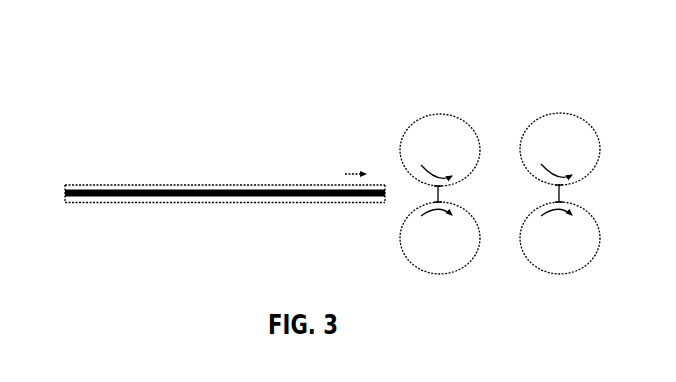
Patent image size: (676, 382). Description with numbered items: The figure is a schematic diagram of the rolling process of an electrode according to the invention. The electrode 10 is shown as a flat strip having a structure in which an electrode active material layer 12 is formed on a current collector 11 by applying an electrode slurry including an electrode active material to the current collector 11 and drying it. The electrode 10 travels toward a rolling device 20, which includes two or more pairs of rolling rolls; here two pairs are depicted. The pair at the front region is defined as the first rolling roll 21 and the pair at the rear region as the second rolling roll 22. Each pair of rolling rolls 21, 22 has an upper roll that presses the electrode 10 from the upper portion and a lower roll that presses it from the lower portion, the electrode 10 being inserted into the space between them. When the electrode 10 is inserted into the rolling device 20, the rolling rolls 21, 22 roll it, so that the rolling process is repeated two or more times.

The electrode 10 is at (225, 241).
The current collector 11 is at (188, 197).
The electrode active material layer 12 is at (272, 197).
The rolling device 20 is at (502, 147).
The first rolling roll 21 is at (450, 115).
The second rolling roll 22 is at (567, 114).